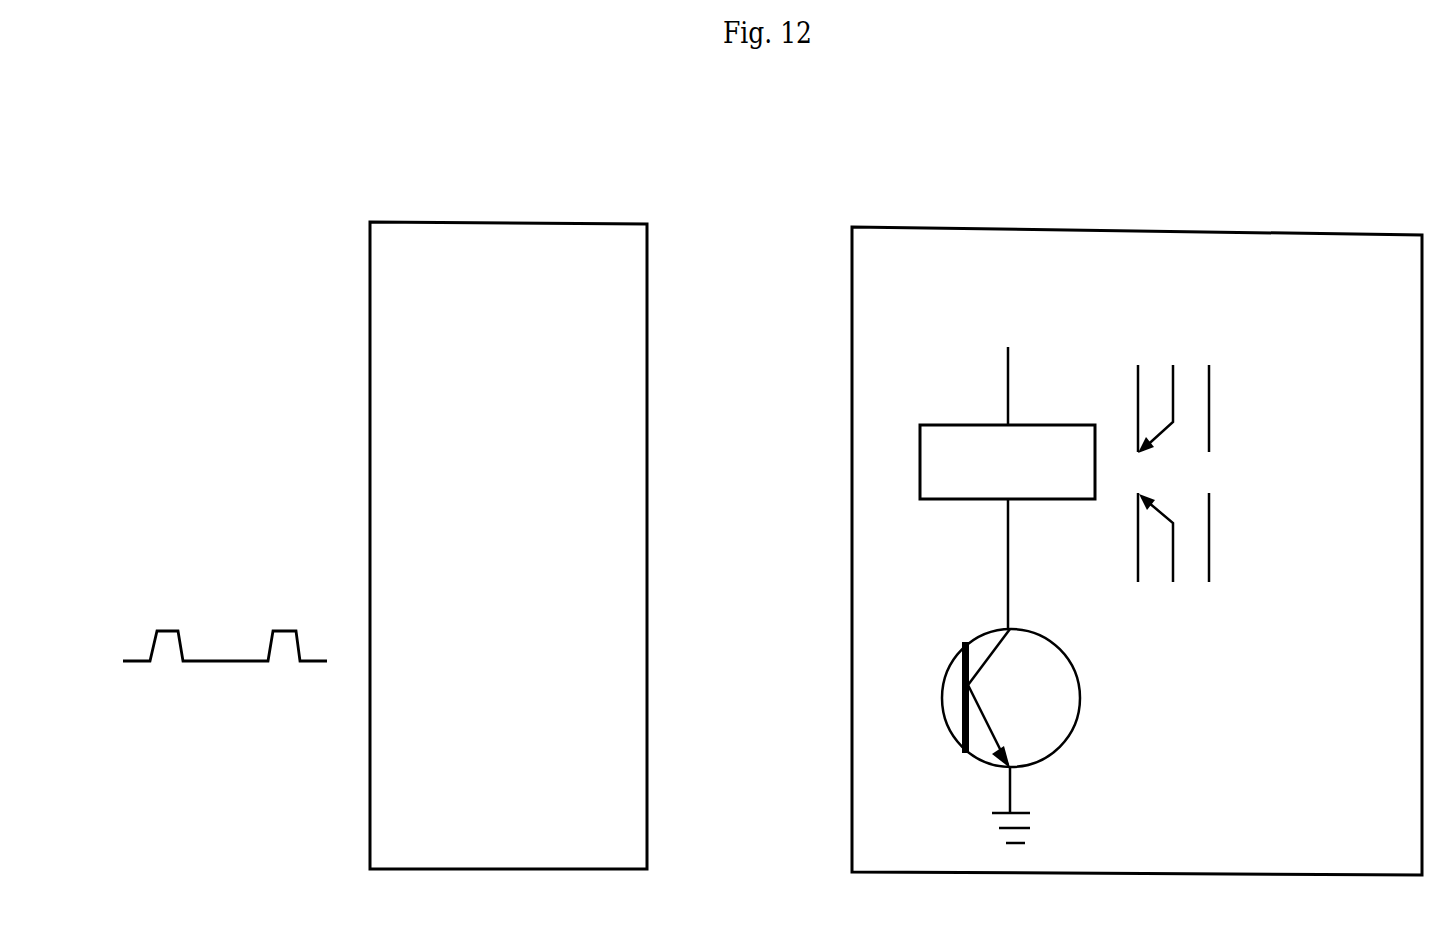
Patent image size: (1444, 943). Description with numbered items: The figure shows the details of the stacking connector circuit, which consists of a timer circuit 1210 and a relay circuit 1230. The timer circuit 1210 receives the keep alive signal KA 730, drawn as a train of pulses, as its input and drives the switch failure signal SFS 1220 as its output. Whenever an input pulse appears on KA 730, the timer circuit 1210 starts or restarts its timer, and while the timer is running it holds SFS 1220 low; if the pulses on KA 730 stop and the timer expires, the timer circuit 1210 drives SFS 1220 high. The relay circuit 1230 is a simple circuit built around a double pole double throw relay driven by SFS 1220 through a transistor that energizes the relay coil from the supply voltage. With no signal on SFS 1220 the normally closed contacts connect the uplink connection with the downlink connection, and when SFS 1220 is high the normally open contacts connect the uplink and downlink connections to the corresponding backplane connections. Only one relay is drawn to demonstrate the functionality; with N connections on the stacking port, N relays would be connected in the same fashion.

The keep alive signal KA 730 is at (358, 690).
The timer circuit 1210 is at (508, 545).
The switch failure signal SFS 1220 is at (964, 698).
The relay circuit 1230 is at (1137, 551).